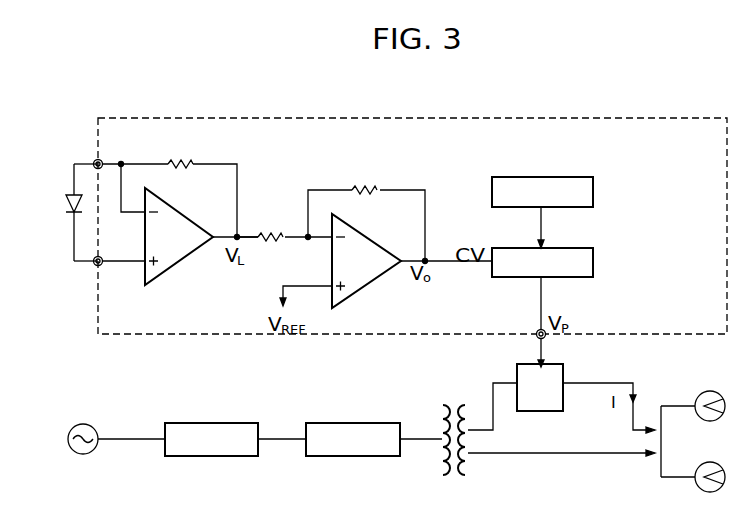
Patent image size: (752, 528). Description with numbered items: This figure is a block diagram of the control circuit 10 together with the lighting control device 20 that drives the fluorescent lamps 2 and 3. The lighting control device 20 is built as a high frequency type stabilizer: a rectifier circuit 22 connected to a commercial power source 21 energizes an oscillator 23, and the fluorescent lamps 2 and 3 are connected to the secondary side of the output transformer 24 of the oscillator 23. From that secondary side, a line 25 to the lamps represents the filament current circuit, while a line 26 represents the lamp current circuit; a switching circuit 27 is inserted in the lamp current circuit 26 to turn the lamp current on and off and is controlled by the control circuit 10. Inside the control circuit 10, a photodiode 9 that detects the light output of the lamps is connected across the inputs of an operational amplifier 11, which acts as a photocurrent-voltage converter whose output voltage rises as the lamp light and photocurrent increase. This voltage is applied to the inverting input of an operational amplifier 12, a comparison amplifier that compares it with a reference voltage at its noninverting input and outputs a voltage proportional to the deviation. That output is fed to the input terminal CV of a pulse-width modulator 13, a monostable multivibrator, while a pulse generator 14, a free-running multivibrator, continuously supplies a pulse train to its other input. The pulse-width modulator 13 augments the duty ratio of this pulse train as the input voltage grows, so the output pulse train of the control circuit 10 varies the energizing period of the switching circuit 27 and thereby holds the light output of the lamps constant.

The fluorescent lamp 2 is at (708, 391).
The fluorescent lamp 3 is at (714, 463).
The photodiode 9 is at (68, 206).
The control circuit 10 is at (574, 118).
The operational amplifier 11 is at (188, 213).
The operational amplifier 12 is at (378, 238).
The pulse-width modulator 13 is at (578, 255).
The pulse generator 14 is at (575, 177).
The lighting control device 20 is at (657, 474).
The commercial power source 21 is at (83, 424).
The rectifier circuit 22 is at (198, 423).
The oscillator 23 is at (333, 423).
The output transformer 24 is at (455, 405).
The line 25 is at (572, 456).
The line 26 is at (586, 386).
The switching circuit 27 is at (537, 411).